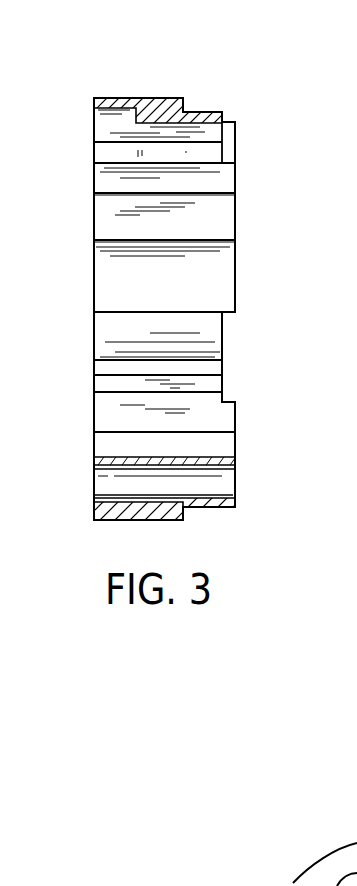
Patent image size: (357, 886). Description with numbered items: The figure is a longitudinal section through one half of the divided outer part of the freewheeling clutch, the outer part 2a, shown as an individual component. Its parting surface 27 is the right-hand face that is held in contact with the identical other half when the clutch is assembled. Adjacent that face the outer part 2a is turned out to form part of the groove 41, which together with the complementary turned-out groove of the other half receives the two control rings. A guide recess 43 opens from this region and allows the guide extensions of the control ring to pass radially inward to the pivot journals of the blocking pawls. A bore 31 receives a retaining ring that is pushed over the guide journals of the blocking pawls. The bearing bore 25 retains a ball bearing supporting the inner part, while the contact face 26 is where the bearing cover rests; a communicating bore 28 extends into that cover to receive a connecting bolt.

The outer part 2a is at (138, 95).
The bearing bore 25 is at (202, 458).
The contact face 26 is at (94, 278).
The parting surface 27 is at (236, 197).
The communicating bore 28 is at (203, 503).
The bore 31 is at (101, 118).
The groove 41 is at (195, 118).
The guide recess 43 is at (222, 145).